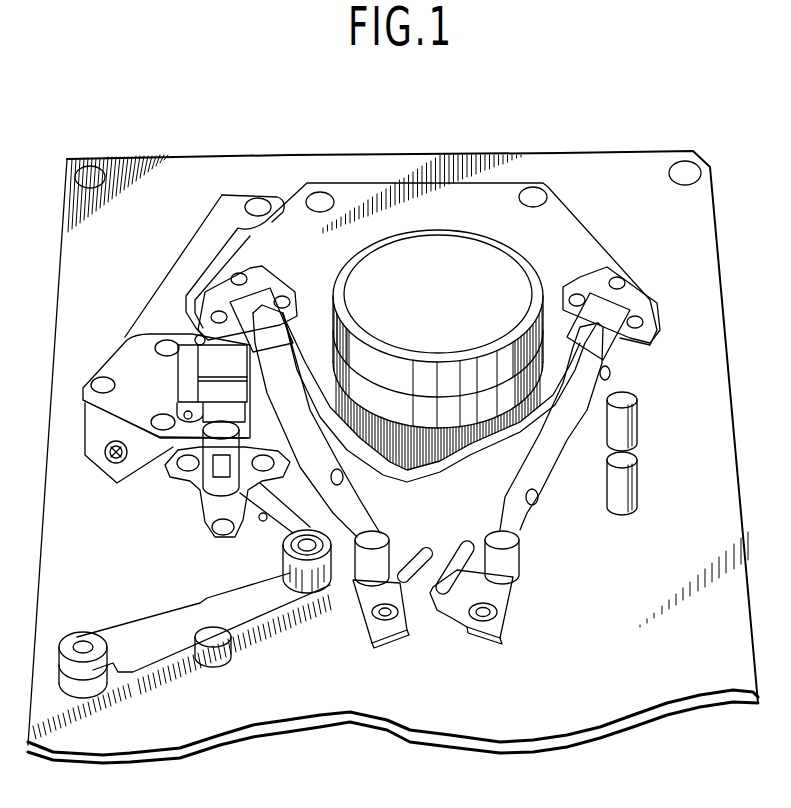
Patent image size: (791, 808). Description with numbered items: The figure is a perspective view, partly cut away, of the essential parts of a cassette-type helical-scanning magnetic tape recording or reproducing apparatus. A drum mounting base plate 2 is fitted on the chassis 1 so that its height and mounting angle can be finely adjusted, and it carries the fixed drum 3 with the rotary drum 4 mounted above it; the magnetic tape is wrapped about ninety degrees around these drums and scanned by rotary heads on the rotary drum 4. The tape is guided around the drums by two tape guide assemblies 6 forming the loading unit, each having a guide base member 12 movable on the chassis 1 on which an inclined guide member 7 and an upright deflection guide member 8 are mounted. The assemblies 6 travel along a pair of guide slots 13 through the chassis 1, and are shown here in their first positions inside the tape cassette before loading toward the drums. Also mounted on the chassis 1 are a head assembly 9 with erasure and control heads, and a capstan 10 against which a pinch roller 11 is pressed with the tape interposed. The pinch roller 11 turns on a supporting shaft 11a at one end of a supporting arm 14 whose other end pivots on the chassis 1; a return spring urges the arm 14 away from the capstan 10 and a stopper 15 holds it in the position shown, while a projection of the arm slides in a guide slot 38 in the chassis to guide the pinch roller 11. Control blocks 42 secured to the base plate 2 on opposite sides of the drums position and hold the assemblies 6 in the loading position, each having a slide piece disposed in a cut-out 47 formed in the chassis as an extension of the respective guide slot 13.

The chassis 1 is at (690, 240).
The drum mounting base plate 2 is at (561, 228).
The fixed drum 3 is at (540, 315).
The rotary drum 4 is at (441, 241).
The tape guide assembly 6 is at (369, 595).
The inclined guide member 7 is at (404, 591).
The deflection guide member 8 is at (358, 561).
The head assembly 9 is at (211, 361).
The capstan 10 is at (220, 461).
The pinch roller 11 is at (290, 570).
The supporting shaft 11a is at (304, 538).
The guide base member 12 is at (510, 628).
The guide slot 13 is at (343, 485).
The supporting arm 14 is at (167, 628).
The stopper 15 is at (215, 647).
The guide slot 38 is at (261, 519).
The control block 42 is at (255, 298).
The cut-out 47 is at (610, 378).